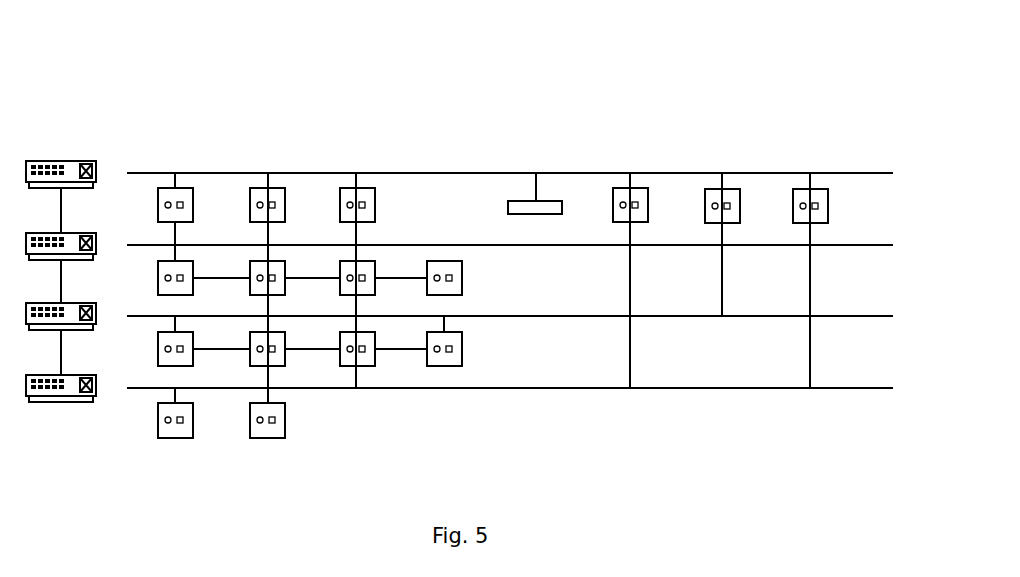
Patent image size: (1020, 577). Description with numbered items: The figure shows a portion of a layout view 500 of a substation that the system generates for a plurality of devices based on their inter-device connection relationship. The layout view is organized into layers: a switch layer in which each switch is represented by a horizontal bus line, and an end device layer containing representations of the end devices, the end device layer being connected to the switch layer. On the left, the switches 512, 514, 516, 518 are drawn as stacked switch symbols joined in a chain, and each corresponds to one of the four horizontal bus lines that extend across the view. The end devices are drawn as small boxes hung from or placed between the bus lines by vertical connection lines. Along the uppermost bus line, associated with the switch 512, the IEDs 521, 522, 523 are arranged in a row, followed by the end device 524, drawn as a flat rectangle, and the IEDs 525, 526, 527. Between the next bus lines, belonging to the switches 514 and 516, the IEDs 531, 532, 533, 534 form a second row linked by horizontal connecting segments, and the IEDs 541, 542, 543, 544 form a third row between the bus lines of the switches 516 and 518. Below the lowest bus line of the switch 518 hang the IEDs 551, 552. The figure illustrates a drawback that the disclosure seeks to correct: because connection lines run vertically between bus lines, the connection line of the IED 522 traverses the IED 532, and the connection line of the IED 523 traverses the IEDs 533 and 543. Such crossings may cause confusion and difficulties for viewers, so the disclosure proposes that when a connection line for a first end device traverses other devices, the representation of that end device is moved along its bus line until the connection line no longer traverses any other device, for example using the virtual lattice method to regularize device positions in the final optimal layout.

The layout view of a substation 500 is at (697, 58).
The switch 512 is at (86, 160).
The switch 514 is at (86, 232).
The switch 516 is at (86, 302).
The switch 518 is at (86, 374).
The IED 521 is at (193, 196).
The IED 522 is at (285, 196).
The IED 523 is at (375, 196).
The end device 524 is at (552, 200).
The IED 525 is at (648, 196).
The IED 526 is at (740, 197).
The IED 527 is at (828, 197).
The IED 531 is at (193, 269).
The IED 532 is at (285, 269).
The IED 533 is at (375, 269).
The IED 534 is at (462, 269).
The IED 541 is at (193, 340).
The IED 542 is at (285, 340).
The IED 543 is at (375, 340).
The IED 544 is at (462, 340).
The IED 551 is at (193, 411).
The IED 552 is at (285, 411).